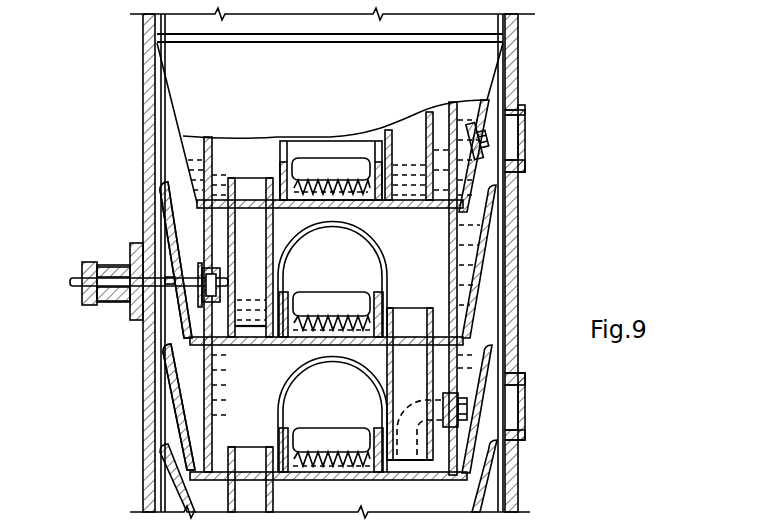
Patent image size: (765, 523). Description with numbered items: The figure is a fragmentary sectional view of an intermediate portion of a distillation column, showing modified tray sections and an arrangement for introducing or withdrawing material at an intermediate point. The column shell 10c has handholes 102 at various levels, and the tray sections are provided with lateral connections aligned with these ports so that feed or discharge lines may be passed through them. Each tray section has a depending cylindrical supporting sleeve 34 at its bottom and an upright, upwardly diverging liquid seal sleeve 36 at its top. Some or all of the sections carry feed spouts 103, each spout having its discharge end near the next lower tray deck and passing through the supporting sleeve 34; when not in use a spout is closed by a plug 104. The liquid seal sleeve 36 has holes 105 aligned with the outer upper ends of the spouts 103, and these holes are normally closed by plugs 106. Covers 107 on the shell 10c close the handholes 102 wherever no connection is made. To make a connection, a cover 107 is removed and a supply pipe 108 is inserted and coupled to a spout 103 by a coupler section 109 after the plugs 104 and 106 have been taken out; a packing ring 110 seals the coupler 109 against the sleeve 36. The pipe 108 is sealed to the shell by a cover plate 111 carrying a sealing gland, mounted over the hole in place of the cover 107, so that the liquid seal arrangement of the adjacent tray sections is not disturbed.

The liquid seal sleeve 36 is at (128, 170).
The supporting sleeve 34 is at (231, 150).
The feed spout 103 is at (245, 296).
The plug 104 is at (463, 388).
The shell 10c is at (513, 254).
The handhole 102 is at (512, 142).
The cover 107 is at (519, 112).
The plug 106 is at (483, 152).
The supply pipe 108 is at (74, 278).
The cover plate 111 is at (133, 247).
The hole 105 is at (198, 262).
The packing ring 110 is at (150, 320).
The coupler section 109 is at (150, 342).